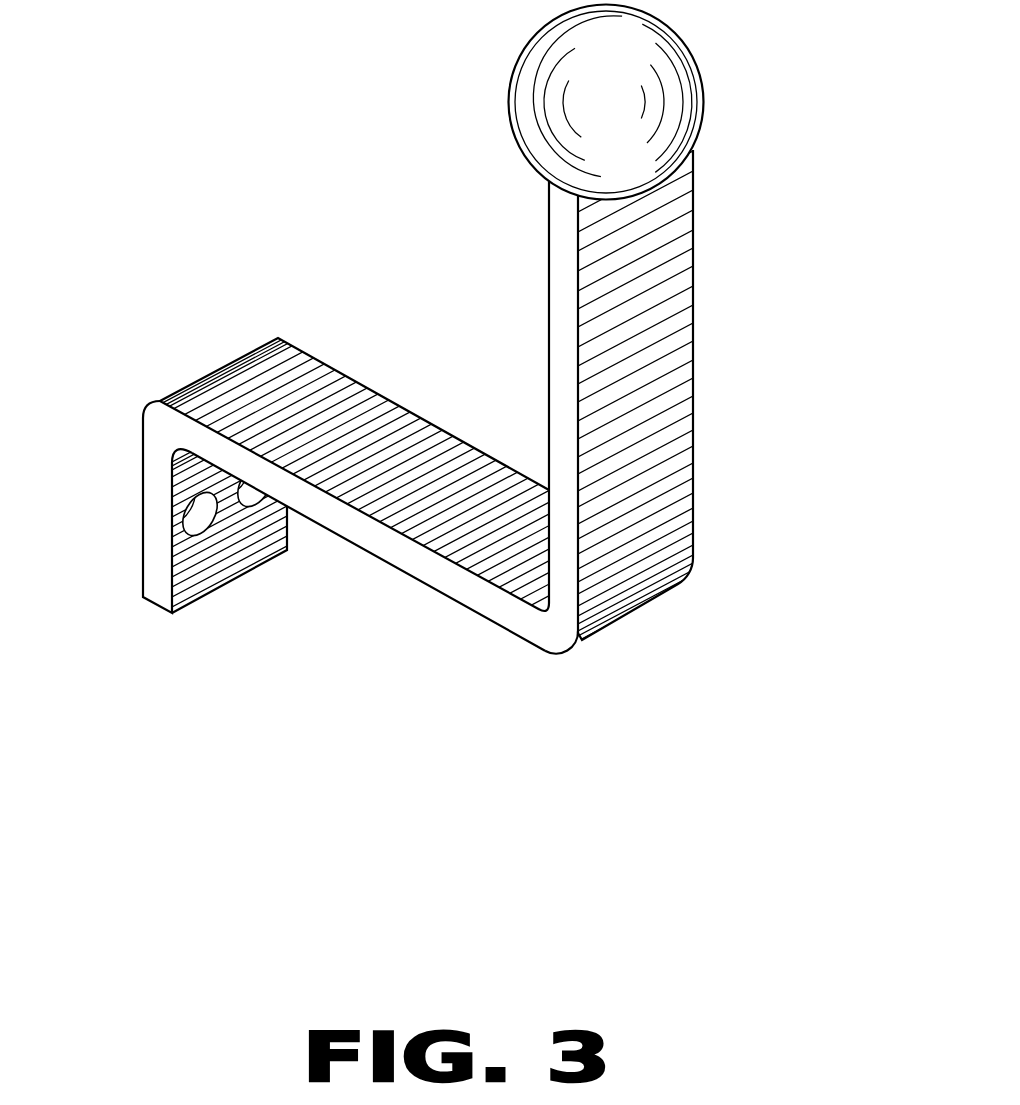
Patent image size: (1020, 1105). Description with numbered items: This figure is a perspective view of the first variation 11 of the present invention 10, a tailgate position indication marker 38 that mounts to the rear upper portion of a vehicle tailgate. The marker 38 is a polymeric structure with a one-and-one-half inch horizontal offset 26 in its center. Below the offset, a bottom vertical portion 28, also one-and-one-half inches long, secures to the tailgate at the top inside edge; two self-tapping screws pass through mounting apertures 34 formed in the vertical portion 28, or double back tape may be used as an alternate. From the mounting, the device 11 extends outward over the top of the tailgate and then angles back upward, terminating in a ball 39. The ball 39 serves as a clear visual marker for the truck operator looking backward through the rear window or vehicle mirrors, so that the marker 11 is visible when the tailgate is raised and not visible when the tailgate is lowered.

The present invention 10 is at (442, 406).
The first variation 11 is at (593, 667).
The horizontal offset 26 is at (403, 437).
The vertical portion 28 is at (142, 500).
The mounting apertures 34 is at (198, 522).
The tailgate position indication marker 38 is at (543, 232).
The ball 39 is at (508, 128).